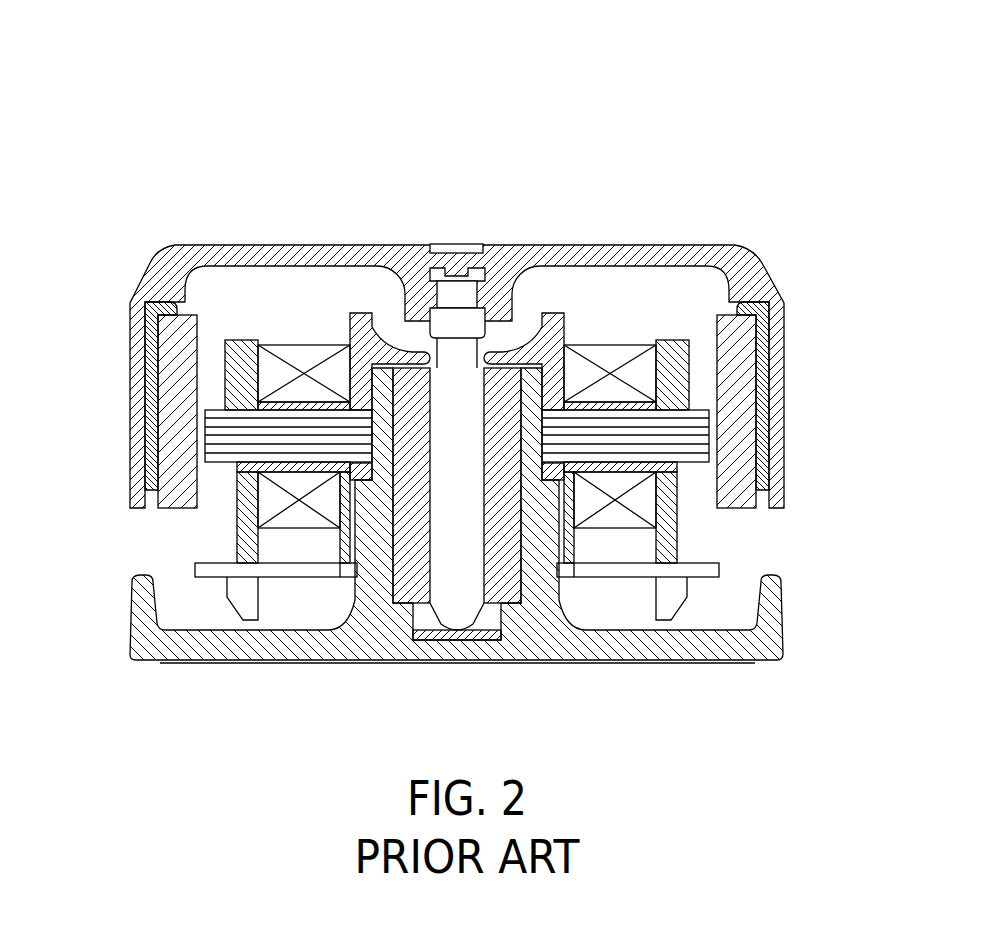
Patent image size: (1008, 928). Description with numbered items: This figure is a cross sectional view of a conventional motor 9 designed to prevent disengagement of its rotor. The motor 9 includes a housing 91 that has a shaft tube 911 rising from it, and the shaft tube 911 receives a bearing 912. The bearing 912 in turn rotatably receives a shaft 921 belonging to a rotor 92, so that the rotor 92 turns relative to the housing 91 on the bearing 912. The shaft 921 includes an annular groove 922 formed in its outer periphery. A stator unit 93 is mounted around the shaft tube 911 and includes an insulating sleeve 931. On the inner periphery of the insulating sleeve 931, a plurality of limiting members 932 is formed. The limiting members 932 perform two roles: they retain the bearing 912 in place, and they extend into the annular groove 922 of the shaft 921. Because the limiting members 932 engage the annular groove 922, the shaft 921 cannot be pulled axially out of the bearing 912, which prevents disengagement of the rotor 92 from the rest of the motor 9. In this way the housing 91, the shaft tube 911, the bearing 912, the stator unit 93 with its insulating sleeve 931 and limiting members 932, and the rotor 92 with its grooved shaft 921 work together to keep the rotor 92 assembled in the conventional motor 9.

The motor 9 is at (448, 96).
The housing 91 is at (773, 623).
The shaft tube 911 is at (568, 363).
The bearing 912 is at (403, 560).
The rotor 92 is at (492, 442).
The shaft 921 is at (467, 580).
The annular groove 922 is at (405, 321).
The stator unit 93 is at (196, 386).
The insulating sleeve 931 is at (238, 343).
The limiting members 932 is at (413, 357).